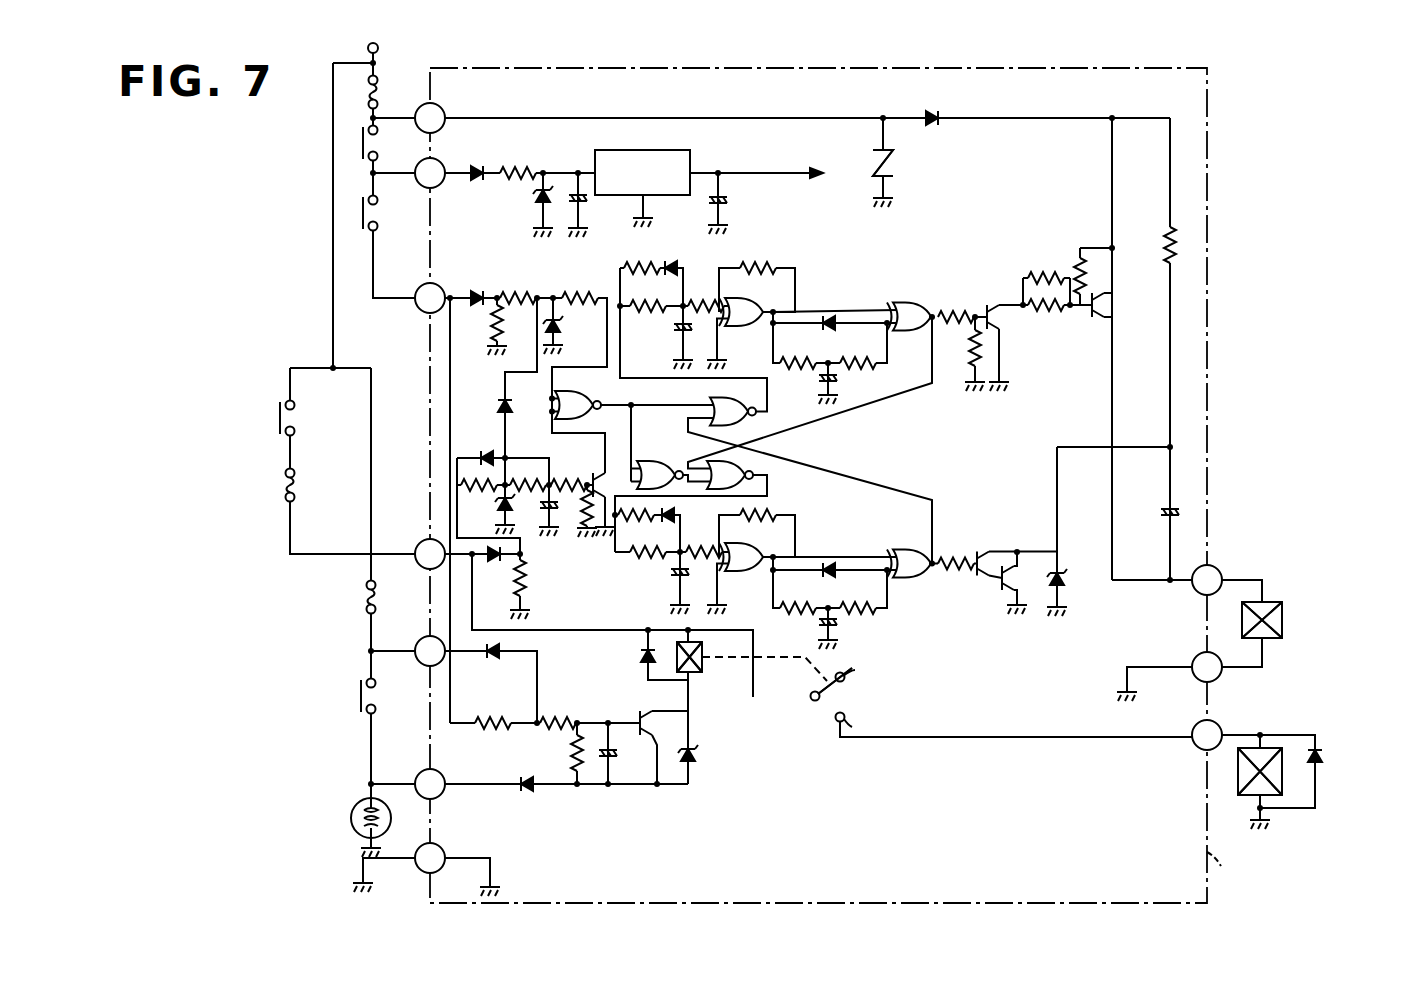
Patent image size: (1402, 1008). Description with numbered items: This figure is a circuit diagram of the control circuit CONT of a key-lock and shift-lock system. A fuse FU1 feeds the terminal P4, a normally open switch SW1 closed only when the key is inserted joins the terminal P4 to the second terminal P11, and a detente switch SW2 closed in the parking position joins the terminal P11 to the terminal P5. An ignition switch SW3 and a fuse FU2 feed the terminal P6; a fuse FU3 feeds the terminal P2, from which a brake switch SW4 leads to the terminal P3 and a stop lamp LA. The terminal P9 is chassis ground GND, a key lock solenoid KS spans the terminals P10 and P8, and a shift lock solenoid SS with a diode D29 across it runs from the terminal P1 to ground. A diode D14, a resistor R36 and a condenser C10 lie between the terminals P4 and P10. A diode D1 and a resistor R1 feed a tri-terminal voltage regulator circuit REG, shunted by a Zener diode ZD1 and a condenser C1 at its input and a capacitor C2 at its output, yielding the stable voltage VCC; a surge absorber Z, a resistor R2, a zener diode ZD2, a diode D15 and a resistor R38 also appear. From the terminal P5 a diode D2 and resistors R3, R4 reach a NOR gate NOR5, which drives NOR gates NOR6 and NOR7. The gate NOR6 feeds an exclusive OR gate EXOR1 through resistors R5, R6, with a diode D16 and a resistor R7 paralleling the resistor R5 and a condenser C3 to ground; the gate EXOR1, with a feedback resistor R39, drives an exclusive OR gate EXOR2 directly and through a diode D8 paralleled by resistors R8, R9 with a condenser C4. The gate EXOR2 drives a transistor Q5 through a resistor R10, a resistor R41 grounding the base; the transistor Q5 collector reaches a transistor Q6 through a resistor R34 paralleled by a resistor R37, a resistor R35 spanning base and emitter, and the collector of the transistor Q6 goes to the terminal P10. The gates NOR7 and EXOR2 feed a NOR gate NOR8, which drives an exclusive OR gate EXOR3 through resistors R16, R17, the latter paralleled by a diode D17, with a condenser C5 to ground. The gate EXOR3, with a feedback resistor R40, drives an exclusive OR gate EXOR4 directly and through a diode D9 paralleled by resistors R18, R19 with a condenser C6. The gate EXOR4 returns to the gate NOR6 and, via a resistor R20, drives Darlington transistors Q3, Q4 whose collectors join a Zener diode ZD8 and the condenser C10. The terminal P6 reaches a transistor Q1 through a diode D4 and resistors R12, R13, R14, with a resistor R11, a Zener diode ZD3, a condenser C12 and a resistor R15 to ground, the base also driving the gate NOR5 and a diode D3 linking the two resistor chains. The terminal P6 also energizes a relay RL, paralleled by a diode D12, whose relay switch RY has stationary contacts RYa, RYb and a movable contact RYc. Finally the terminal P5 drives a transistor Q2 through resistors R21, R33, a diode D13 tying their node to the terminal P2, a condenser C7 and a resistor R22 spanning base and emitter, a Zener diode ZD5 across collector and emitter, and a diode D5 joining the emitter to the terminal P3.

The terminal P1 is at (1207, 735).
The terminal P2 is at (430, 651).
The terminal P3 is at (430, 784).
The terminal P4 is at (430, 118).
The terminal P5 is at (430, 298).
The terminal P6 is at (430, 554).
The terminal P8 is at (1207, 667).
The terminal P9 is at (430, 858).
The terminal P10 is at (1207, 580).
The second terminal P11 is at (430, 173).
The fuse FU1 is at (393, 92).
The fuse FU2 is at (294, 485).
The fuse FU3 is at (360, 597).
The normally open switch SW1 is at (362, 144).
The detente switch SW2 is at (361, 211).
The ignition switch SW3 is at (280, 403).
The brake switch SW4 is at (360, 705).
The stop lamp LA is at (351, 822).
The ground GND is at (398, 884).
The diode D1 is at (481, 164).
The resistor R1 is at (519, 164).
The Zener diode ZD1 is at (534, 198).
The condenser C1 is at (581, 201).
The tri-terminal voltage regulator circuit REG is at (612, 150).
The capacitor C2 is at (727, 201).
The stable voltage VCC is at (812, 160).
The surge absorber Z is at (890, 175).
The diode D14 is at (932, 116).
The resistor R36 is at (1166, 237).
The diode D2 is at (484, 291).
The resistor R3 is at (523, 284).
The resistor R2 is at (509, 323).
The resistor R4 is at (588, 284).
The zener diode ZD2 is at (556, 331).
The diode D3 is at (498, 405).
The resistor R7 is at (622, 266).
The diode D16 is at (662, 268).
The resistor R5 is at (648, 297).
The resistor R6 is at (691, 304).
The condenser C3 is at (683, 334).
The exclusive OR gate EXOR1 is at (751, 304).
The resistor R39 is at (746, 268).
The diode D8 is at (843, 334).
The resistor R8 is at (798, 373).
The resistor R9 is at (858, 373).
The condenser C4 is at (818, 391).
The exclusive OR gate EXOR2 is at (916, 308).
The transistor Q5 is at (986, 304).
The resistor R10 is at (963, 324).
The resistor R41 is at (968, 379).
The resistor R37 is at (1066, 270).
The resistor R34 is at (1055, 314).
The resistor R35 is at (1080, 289).
The transistor Q6 is at (1088, 327).
The diode D15 is at (490, 451).
The resistor R12 is at (483, 499).
The resistor R13 is at (526, 476).
The resistor R14 is at (568, 476).
The Zener diode ZD3 is at (487, 518).
The condenser C12 is at (547, 510).
The resistor R15 is at (592, 529).
The transistor Q1 is at (598, 474).
The NOR gate NOR5 is at (579, 399).
The NOR gate NOR6 is at (728, 404).
The NOR gate NOR7 is at (657, 469).
The NOR gate NOR8 is at (738, 480).
The diode D4 is at (492, 568).
The resistor R11 is at (536, 578).
The resistor R38 is at (636, 527).
The diode D17 is at (684, 510).
The resistor R17 is at (644, 566).
The resistor R16 is at (701, 542).
The condenser C5 is at (682, 576).
The exclusive OR gate EXOR3 is at (751, 550).
The resistor R40 is at (764, 514).
The diode D9 is at (832, 576).
The resistor R18 is at (796, 618).
The resistor R19 is at (860, 618).
The condenser C6 is at (837, 637).
The exclusive OR gate EXOR4 is at (898, 556).
The resistor R20 is at (953, 573).
The transistor Q3 is at (973, 579).
The transistor Q4 is at (999, 596).
The Zener diode ZD8 is at (1061, 583).
The condenser C10 is at (1160, 511).
The diode D13 is at (491, 664).
The resistor R21 is at (472, 728).
The resistor R33 is at (558, 716).
The resistor R22 is at (573, 762).
The condenser C7 is at (612, 754).
The transistor Q2 is at (640, 718).
The diode D5 is at (532, 778).
The Zener diode ZD5 is at (691, 748).
The diode D12 is at (642, 666).
The relay RL is at (703, 657).
The relay switch RY is at (820, 700).
The stationary contact RYa is at (865, 682).
The movable contact RYc is at (838, 701).
The stationary contact RYb is at (865, 726).
The key lock solenoid KS is at (1284, 620).
The shift lock solenoid SS is at (1274, 774).
The diode D29 is at (1312, 764).
The controller CONT is at (1245, 886).